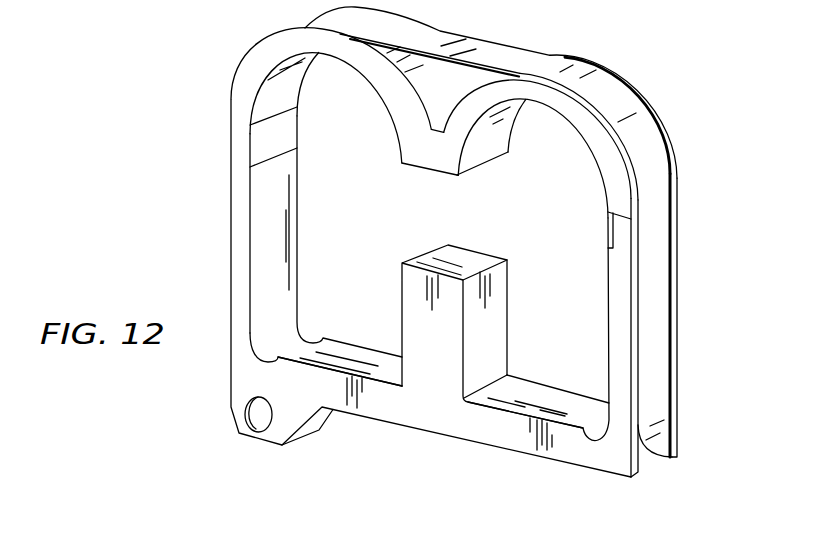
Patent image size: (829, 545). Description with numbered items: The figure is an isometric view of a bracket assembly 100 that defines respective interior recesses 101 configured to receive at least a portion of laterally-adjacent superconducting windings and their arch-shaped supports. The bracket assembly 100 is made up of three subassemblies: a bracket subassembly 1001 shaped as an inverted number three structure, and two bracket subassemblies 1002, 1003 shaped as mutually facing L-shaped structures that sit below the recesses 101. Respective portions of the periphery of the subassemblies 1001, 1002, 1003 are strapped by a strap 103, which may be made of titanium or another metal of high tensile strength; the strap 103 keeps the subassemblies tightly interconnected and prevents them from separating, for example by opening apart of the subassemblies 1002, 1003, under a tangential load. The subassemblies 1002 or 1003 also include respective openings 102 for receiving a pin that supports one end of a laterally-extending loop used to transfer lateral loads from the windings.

The bracket assembly 100 is at (449, 242).
The bracket subassembly 1001 is at (641, 95).
The bracket subassembly 1002 is at (336, 355).
The bracket subassembly 1003 is at (548, 386).
The interior recesses 101 is at (364, 192).
The openings 102 is at (234, 414).
The strap 103 is at (498, 46).